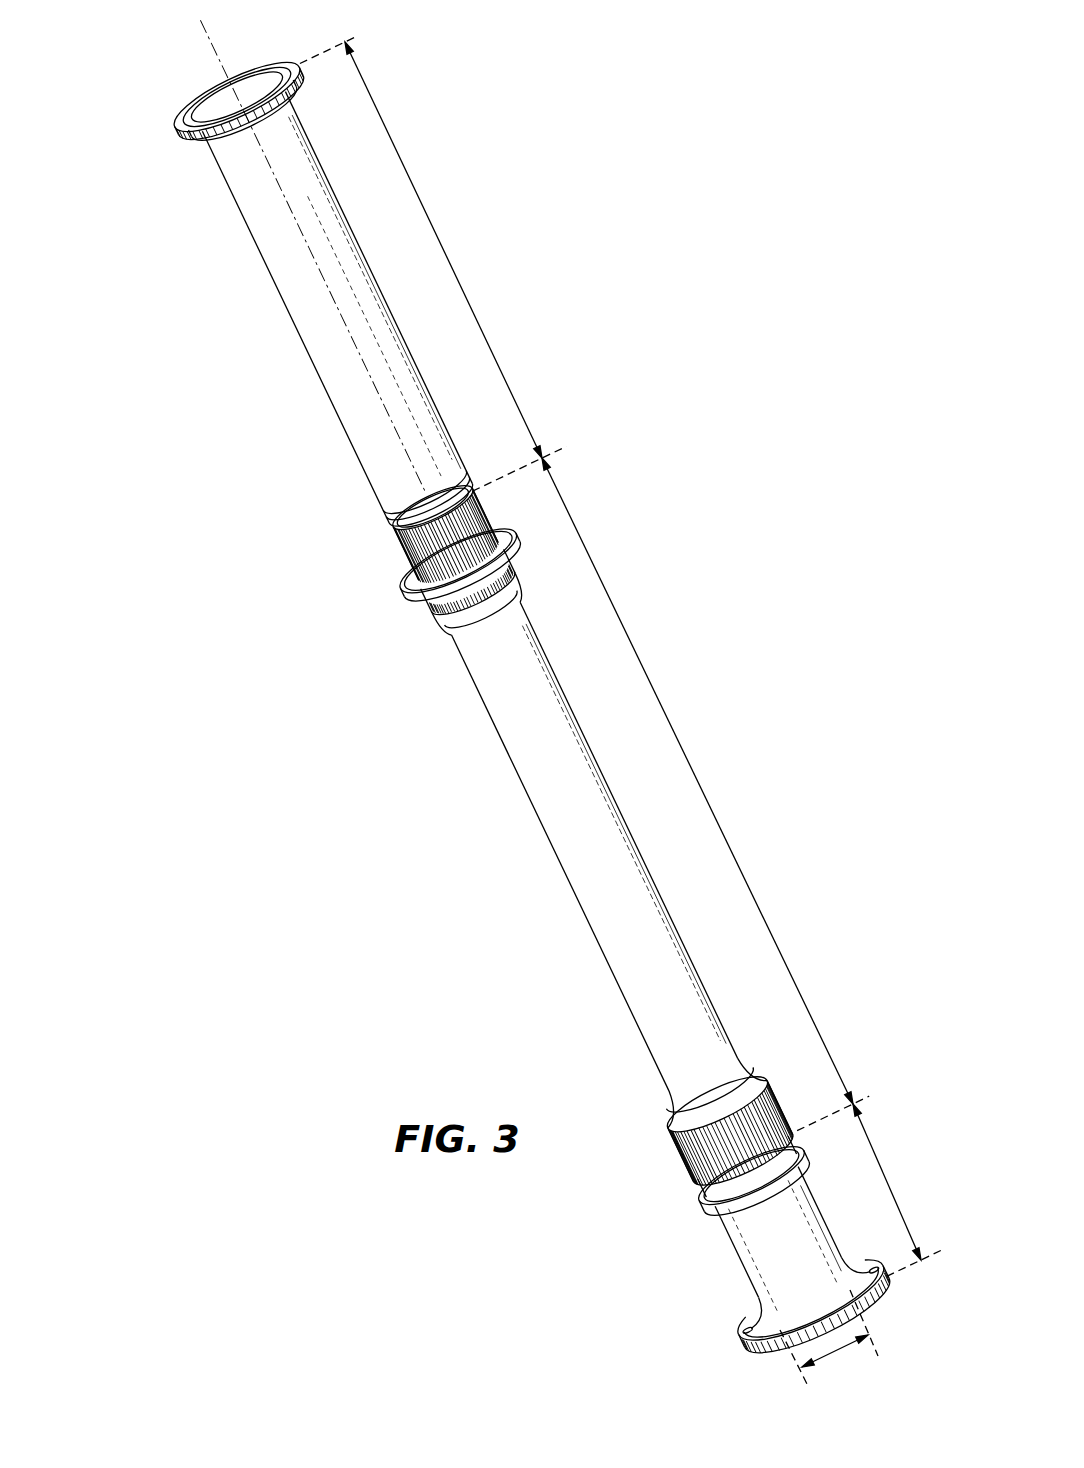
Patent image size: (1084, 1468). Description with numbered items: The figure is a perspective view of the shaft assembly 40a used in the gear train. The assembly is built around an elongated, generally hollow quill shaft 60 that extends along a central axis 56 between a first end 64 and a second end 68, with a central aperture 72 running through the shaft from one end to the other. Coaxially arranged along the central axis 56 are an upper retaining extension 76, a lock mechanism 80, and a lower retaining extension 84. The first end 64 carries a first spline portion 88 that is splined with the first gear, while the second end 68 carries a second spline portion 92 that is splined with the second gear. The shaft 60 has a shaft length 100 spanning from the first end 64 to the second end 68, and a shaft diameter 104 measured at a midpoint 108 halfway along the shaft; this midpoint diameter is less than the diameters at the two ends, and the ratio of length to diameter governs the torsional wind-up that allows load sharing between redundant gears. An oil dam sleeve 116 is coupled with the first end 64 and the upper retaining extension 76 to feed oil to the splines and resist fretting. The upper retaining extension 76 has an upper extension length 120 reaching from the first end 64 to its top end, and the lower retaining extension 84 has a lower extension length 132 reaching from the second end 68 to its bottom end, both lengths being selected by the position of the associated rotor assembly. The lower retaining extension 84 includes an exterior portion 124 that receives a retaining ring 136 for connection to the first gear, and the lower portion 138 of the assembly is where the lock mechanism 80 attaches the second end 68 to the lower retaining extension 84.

The shaft assembly 40a is at (128, 194).
The central axis 56 is at (222, 68).
The shaft 60 is at (518, 728).
The first end 64 is at (463, 614).
The second end 68 is at (670, 1152).
The central aperture 72 is at (201, 94).
The upper retaining extension 76 is at (300, 343).
The lock mechanism 80 is at (703, 1183).
The lower retaining extension 84 is at (730, 1248).
The first spline portion 88 is at (401, 543).
The second spline portion 92 is at (663, 1138).
The shaft length 100 is at (721, 822).
The shaft diameter 104 is at (829, 1338).
The midpoint 108 is at (599, 866).
The oil dam sleeve 116 is at (410, 600).
The upper extension length 120 is at (438, 238).
The exterior portion 124 is at (728, 1347).
The lower extension length 132 is at (888, 1178).
The retaining ring 136 is at (392, 530).
The lower portion 138 is at (583, 1241).